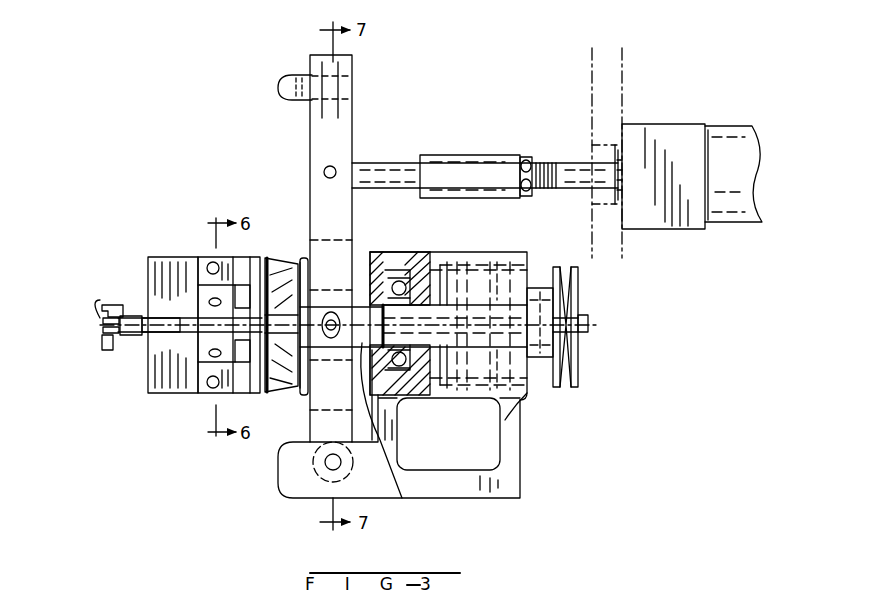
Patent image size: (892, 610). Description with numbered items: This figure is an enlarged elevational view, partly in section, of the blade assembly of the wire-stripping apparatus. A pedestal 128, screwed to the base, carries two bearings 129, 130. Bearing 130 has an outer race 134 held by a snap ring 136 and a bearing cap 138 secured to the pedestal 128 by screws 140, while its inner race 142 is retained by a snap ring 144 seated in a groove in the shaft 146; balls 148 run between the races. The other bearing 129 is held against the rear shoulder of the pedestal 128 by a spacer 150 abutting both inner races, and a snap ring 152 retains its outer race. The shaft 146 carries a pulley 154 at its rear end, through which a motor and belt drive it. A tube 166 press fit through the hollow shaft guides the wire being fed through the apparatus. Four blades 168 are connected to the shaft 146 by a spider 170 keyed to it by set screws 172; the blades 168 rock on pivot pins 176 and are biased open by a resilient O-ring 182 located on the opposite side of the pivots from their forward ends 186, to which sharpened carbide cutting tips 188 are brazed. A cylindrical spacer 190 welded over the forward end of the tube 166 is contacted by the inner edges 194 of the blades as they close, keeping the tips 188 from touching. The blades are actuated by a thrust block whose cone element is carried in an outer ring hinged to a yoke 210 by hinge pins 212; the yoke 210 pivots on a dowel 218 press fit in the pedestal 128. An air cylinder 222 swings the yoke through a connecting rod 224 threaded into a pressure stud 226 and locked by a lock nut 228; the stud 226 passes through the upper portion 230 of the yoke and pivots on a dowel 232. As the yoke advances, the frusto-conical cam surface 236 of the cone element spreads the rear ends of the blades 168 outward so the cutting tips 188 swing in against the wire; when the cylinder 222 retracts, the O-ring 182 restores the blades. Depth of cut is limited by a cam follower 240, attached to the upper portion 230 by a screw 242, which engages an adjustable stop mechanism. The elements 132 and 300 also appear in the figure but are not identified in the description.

The pedestal 128 is at (515, 470).
The bearing 129 is at (532, 375).
The bearing 130 is at (433, 282).
The housing 132 is at (487, 262).
The outer race 134 is at (422, 257).
The snap ring 136 is at (447, 300).
The bearing cap 138 is at (390, 262).
The screws 140 is at (377, 283).
The inner race 142 is at (438, 352).
The snap ring 144 is at (395, 480).
The shaft 146 is at (497, 266).
The balls 148 is at (522, 272).
The spacer 150 is at (450, 350).
The snap ring 152 is at (492, 377).
The pulley 154 is at (578, 355).
The tube 166 is at (588, 323).
The blades 168 is at (160, 262).
The spider 170 is at (238, 262).
The set screws 172 is at (208, 302).
The pivot pins 176 is at (207, 270).
The O-ring 182 is at (264, 256).
The forward ends 186 is at (118, 302).
The carbide cutting tips 188 is at (100, 318).
The cylindrical spacer 190 is at (132, 305).
The inner edges 194 is at (104, 319).
The yoke 210 is at (325, 285).
The hinge pins 212 is at (331, 338).
The dowel 218 is at (325, 463).
The air cylinder 222 is at (667, 124).
The connecting rod 224 is at (570, 163).
The pressure stud 226 is at (432, 156).
The lock nut 228 is at (527, 156).
The upper portion 230 is at (352, 112).
The dowel 232 is at (324, 172).
The frusto-conical cam surface 236 is at (272, 378).
The cam follower 240 is at (298, 80).
The screw 242 is at (352, 64).
The reference plane 300 is at (626, 66).